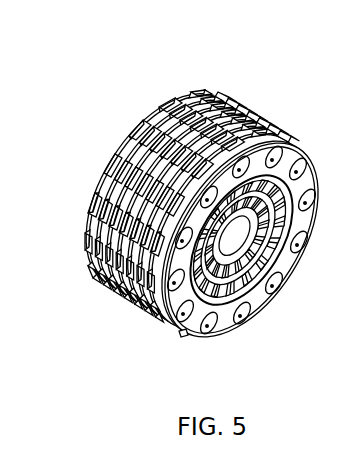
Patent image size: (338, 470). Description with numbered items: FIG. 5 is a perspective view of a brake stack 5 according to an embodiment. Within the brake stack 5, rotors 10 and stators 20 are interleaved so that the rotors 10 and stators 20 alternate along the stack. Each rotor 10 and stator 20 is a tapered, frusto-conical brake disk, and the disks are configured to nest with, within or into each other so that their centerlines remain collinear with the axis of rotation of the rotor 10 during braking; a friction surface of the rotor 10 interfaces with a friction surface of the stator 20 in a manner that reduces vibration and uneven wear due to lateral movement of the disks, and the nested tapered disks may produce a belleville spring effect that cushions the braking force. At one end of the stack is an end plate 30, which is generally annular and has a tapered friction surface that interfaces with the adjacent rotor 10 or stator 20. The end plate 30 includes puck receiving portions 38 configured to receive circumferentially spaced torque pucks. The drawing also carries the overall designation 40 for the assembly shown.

The brake stack 5 is at (179, 211).
The rotor 10 is at (98, 240).
The stator 20 is at (117, 203).
The end plate 30 is at (257, 298).
The puck receiving portion 38 is at (183, 337).
The assembly 40 is at (180, 204).